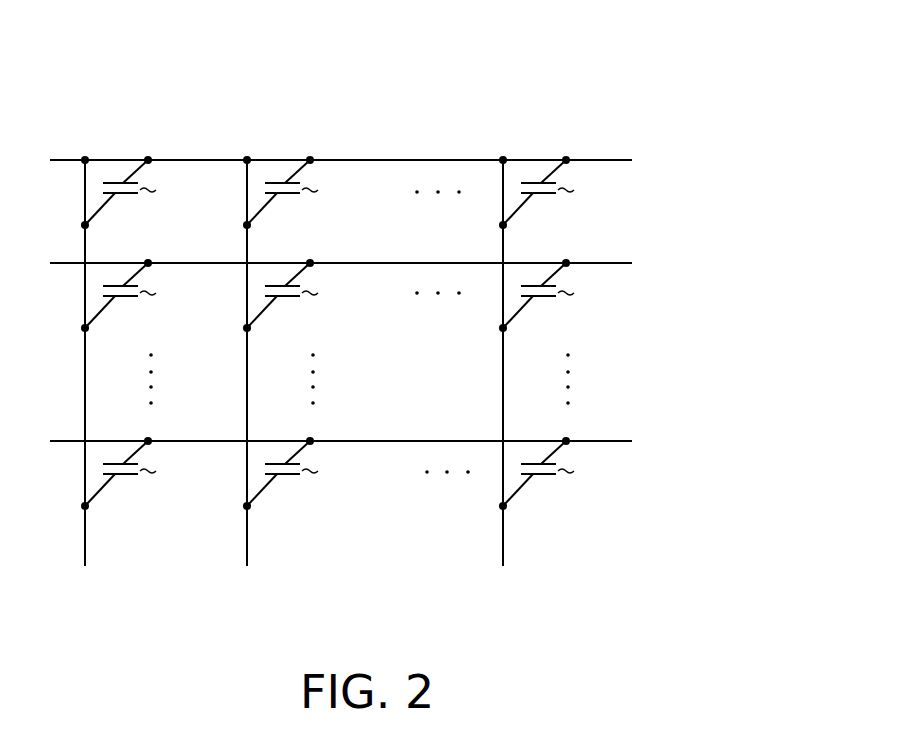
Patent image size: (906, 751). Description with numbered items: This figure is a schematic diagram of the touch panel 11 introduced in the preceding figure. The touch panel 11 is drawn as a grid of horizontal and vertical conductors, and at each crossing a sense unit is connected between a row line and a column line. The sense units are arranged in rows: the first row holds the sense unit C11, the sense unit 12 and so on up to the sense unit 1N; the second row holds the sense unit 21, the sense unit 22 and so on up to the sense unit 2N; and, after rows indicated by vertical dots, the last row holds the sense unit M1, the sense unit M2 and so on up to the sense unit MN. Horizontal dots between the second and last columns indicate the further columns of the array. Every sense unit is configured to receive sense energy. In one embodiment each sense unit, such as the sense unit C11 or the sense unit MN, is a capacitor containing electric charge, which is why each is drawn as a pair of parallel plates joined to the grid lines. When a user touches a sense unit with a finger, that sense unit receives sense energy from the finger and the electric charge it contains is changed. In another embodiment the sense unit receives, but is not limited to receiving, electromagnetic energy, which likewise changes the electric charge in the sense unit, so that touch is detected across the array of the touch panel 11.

The touch panel 11 is at (692, 93).
The sense unit C11 is at (148, 192).
The sense unit 12 is at (310, 192).
The sense unit 1N is at (571, 192).
The sense unit 21 is at (148, 295).
The sense unit 22 is at (310, 295).
The sense unit 2N is at (571, 295).
The sense unit M1 is at (154, 473).
The sense unit M2 is at (315, 473).
The sense unit MN is at (578, 473).